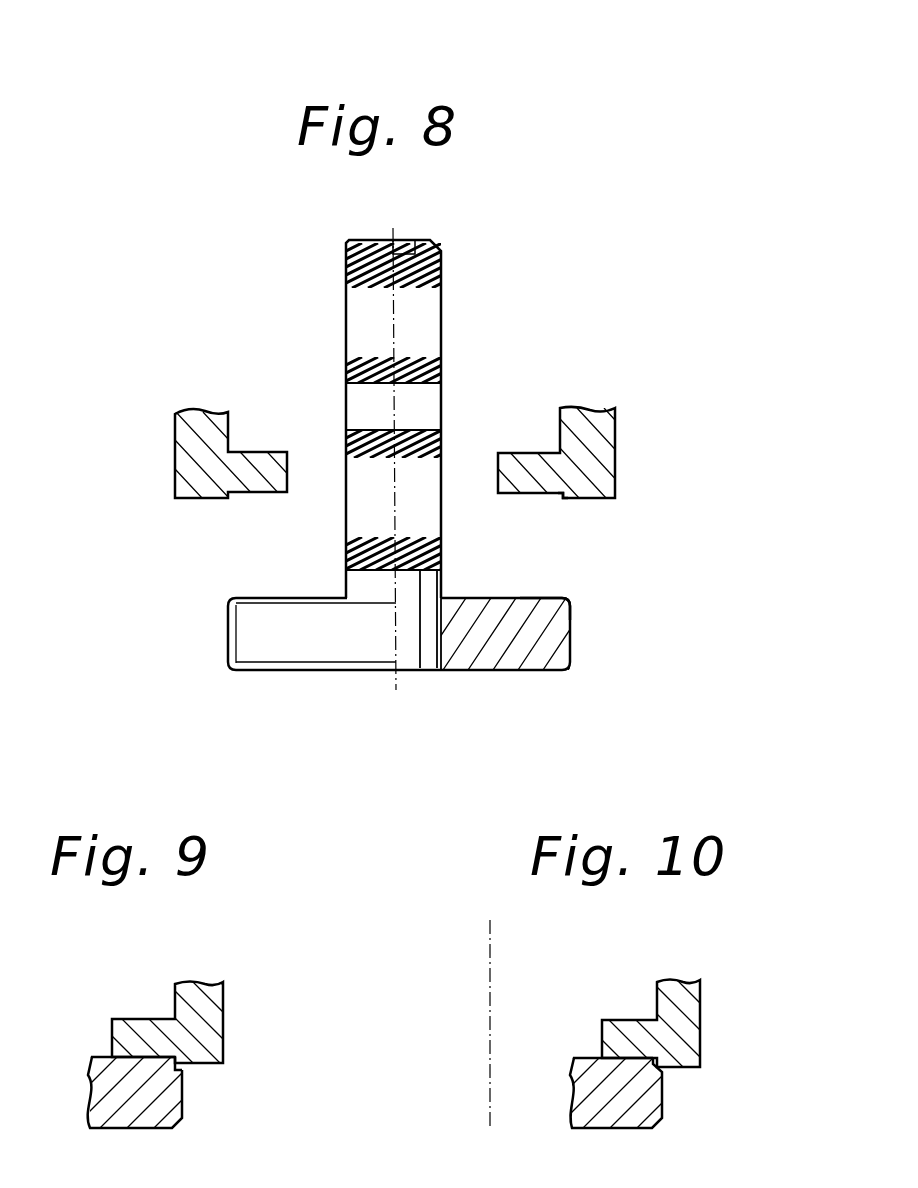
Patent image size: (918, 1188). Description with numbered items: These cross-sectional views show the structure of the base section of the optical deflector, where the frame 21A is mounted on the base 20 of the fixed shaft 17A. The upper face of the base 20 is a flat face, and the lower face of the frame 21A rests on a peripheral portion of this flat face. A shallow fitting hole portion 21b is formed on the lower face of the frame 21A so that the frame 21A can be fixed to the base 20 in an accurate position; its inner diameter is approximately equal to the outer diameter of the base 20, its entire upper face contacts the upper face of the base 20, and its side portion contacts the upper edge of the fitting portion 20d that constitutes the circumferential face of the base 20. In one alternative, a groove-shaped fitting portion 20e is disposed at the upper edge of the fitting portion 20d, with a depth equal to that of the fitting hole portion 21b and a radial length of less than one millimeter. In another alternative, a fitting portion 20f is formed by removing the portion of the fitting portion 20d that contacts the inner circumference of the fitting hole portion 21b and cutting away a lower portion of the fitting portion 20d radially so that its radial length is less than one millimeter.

In FIG. 8, the fixed shaft 17A is at (425, 320).
In FIG. 8, the frame 21A is at (597, 445).
In FIG. 9, the frame 21A is at (195, 992).
In FIG. 10, the frame 21A is at (675, 992).
In FIG. 8, the fitting hole portion 21b is at (561, 498).
In FIG. 8, the base 20 is at (548, 645).
In FIG. 9, the base 20 is at (152, 1112).
In FIG. 10, the base 20 is at (628, 1118).
In FIG. 8, the fitting portion 20d is at (572, 600).
In FIG. 9, the fitting portion 20e is at (215, 1052).
In FIG. 10, the fitting portion 20f is at (666, 1073).